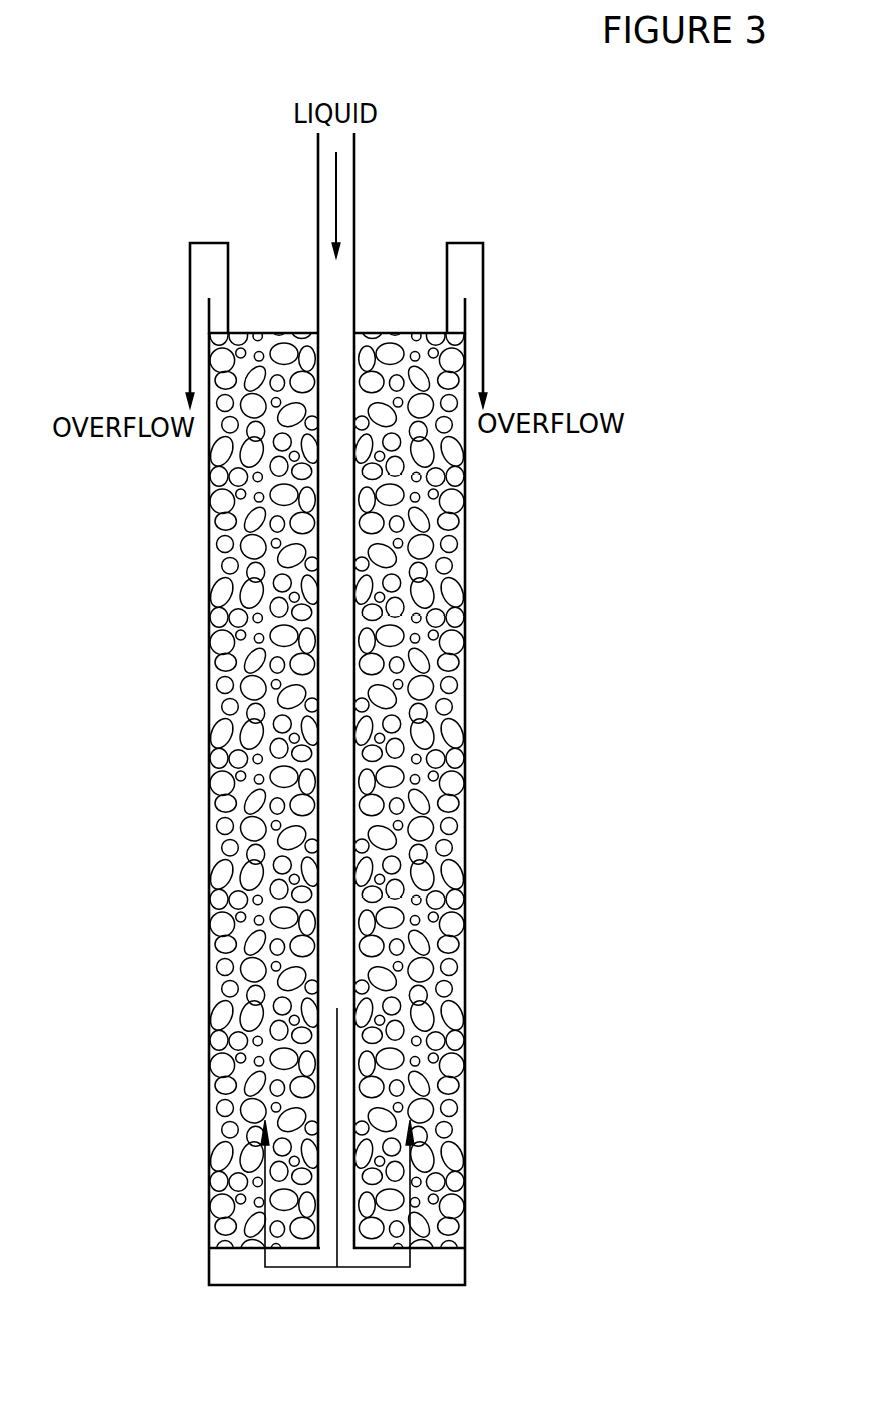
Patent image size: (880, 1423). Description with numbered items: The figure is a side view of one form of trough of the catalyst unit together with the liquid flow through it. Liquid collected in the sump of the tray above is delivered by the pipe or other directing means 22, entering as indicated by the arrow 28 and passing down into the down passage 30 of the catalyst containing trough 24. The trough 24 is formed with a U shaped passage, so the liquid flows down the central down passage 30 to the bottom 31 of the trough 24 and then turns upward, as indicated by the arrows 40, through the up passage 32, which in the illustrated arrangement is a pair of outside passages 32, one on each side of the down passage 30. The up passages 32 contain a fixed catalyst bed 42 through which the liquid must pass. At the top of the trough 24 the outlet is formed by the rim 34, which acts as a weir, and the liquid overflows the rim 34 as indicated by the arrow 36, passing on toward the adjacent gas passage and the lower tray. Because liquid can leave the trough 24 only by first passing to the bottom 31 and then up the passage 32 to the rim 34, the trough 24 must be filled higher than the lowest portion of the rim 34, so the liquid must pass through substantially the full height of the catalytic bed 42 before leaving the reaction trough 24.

The pipe 22 is at (375, 691).
The catalyst containing trough 24 is at (376, 809).
The arrow indicating liquid flow down the passage 28 is at (382, 194).
The down passage 30 is at (235, 957).
The bottom of the trough 31 is at (337, 1318).
The up passage 32 is at (338, 790).
The trough outlet or rim 34 is at (337, 302).
The arrow indicating overflow 36 is at (337, 325).
The arrow indicating upward liquid flow 40 is at (338, 1193).
The fixed catalyst bed 42 is at (403, 913).